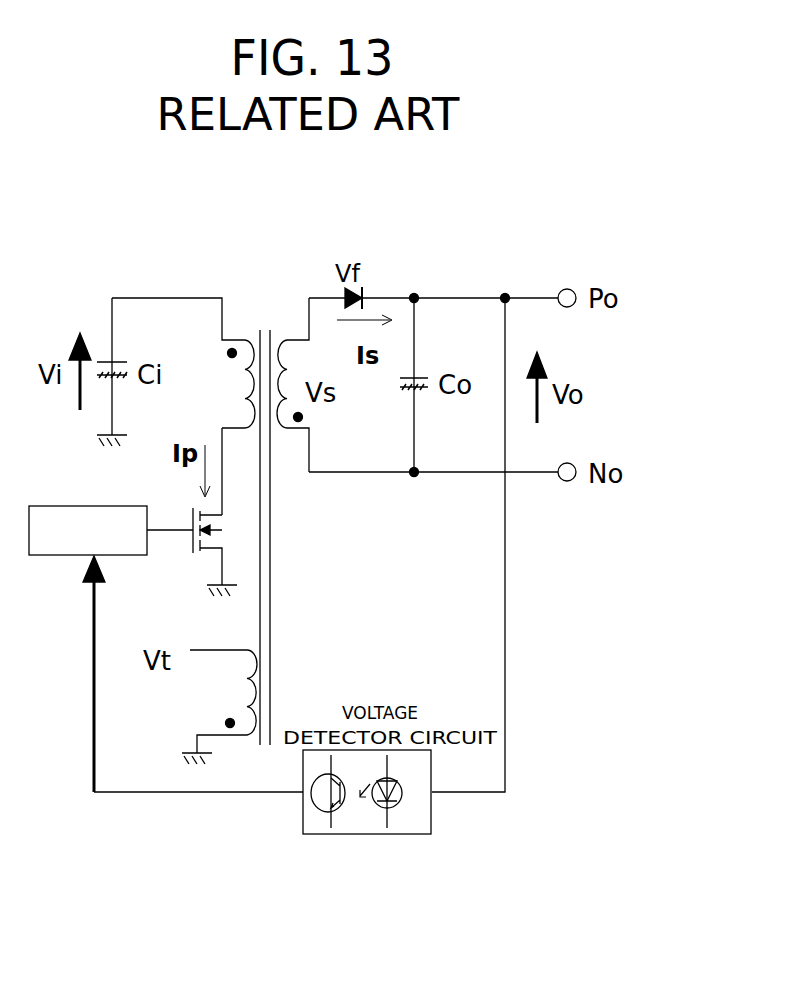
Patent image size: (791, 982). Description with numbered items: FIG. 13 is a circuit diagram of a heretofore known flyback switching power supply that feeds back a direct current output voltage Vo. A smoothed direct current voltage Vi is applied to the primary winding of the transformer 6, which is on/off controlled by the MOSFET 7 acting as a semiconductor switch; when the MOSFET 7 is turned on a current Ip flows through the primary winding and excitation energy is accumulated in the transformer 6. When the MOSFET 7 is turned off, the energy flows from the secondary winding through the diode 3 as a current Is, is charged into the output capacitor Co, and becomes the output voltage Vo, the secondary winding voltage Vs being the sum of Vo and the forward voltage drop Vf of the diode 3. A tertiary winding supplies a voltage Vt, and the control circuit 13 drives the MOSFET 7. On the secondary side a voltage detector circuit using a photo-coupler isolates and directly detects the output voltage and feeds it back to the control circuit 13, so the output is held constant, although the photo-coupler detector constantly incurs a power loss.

The diode 3 is at (368, 282).
The transformer 6 is at (262, 325).
The MOSFET 7 is at (187, 562).
The control circuit 13 is at (60, 555).